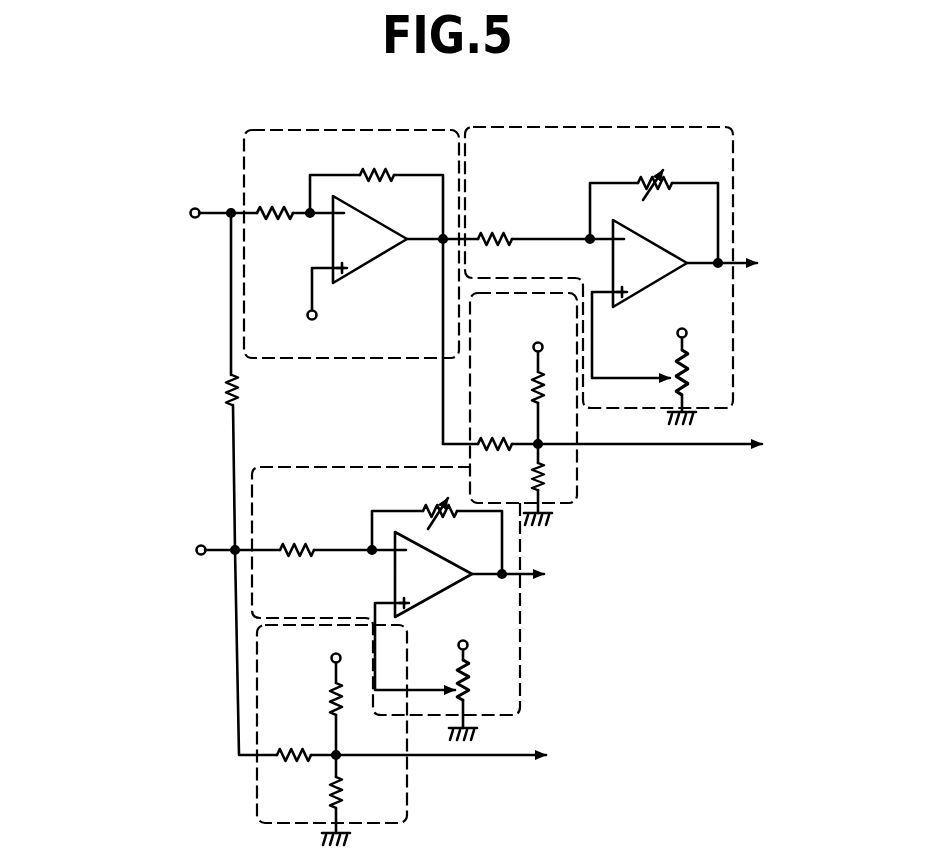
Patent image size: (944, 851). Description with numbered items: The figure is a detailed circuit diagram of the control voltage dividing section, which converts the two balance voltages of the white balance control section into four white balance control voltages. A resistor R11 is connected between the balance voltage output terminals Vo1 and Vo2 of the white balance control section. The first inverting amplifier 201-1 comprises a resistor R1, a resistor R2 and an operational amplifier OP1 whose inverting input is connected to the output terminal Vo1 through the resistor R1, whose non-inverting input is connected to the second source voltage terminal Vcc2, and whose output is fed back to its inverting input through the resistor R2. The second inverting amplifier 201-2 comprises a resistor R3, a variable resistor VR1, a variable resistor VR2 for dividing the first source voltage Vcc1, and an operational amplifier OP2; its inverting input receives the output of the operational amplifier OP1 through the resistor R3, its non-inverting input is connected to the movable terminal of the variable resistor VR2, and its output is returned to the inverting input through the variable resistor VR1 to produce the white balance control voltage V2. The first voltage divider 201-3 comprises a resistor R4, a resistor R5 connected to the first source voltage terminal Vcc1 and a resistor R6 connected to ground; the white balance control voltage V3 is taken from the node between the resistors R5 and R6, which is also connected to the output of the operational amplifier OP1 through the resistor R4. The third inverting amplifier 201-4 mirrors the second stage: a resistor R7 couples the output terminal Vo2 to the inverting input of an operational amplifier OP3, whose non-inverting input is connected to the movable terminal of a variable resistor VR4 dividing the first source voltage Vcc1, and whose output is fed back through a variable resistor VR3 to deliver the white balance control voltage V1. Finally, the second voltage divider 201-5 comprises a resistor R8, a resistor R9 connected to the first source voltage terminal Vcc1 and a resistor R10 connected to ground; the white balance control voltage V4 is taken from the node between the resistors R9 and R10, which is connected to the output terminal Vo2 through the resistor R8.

The first inverting amplifier 201-1 is at (244, 172).
The second inverting amplifier 201-2 is at (733, 209).
The first voltage divider 201-3 is at (577, 475).
The third inverting amplifier 201-4 is at (522, 657).
The second voltage divider 201-5 is at (407, 790).
The balance voltage output terminal Vo1 is at (170, 214).
The balance voltage output terminal Vo2 is at (178, 551).
The first source voltage terminal Vcc1 is at (508, 495).
The second source voltage terminal Vcc2 is at (313, 328).
The white balance control voltage V1 is at (566, 575).
The white balance control voltage V2 is at (781, 265).
The white balance control voltage V3 is at (787, 445).
The white balance control voltage V4 is at (569, 756).
The resistor R1 is at (270, 200).
The resistor R2 is at (377, 160).
The resistor R3 is at (492, 221).
The resistor R4 is at (495, 431).
The resistor R5 is at (556, 387).
The resistor R6 is at (552, 464).
The resistor R7 is at (294, 536).
The resistor R8 is at (294, 741).
The resistor R9 is at (354, 730).
The resistor R10 is at (357, 811).
The resistor R11 is at (256, 390).
The variable resistor VR1 is at (655, 170).
The variable resistor VR2 is at (699, 387).
The variable resistor VR3 is at (438, 500).
The variable resistor VR4 is at (482, 700).
The operational amplifier OP1 is at (370, 239).
The operational amplifier OP2 is at (650, 263).
The operational amplifier OP3 is at (433, 574).